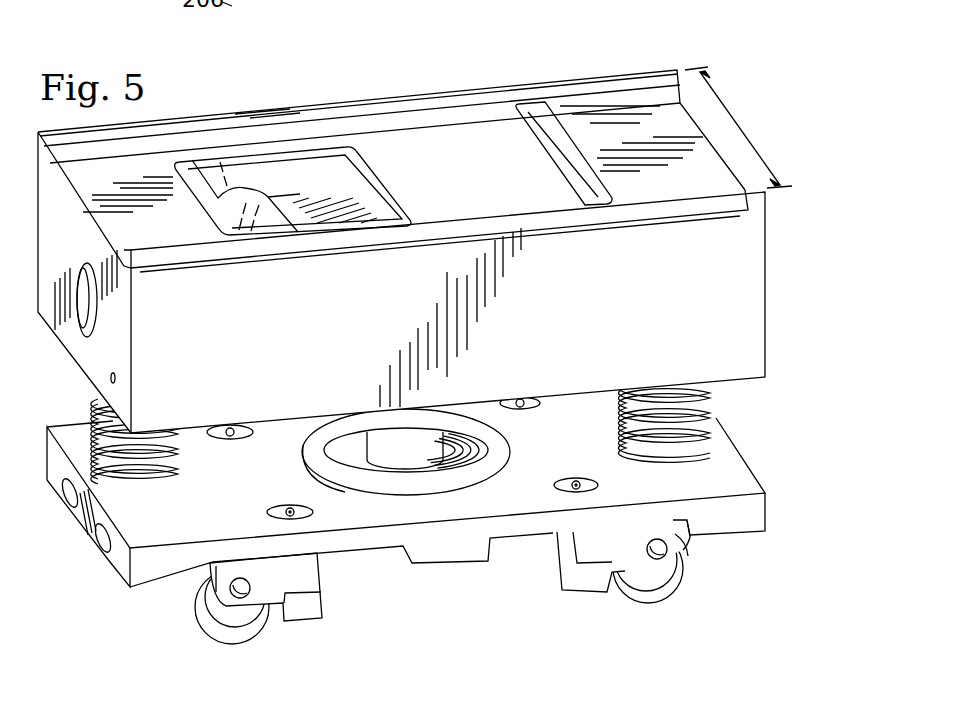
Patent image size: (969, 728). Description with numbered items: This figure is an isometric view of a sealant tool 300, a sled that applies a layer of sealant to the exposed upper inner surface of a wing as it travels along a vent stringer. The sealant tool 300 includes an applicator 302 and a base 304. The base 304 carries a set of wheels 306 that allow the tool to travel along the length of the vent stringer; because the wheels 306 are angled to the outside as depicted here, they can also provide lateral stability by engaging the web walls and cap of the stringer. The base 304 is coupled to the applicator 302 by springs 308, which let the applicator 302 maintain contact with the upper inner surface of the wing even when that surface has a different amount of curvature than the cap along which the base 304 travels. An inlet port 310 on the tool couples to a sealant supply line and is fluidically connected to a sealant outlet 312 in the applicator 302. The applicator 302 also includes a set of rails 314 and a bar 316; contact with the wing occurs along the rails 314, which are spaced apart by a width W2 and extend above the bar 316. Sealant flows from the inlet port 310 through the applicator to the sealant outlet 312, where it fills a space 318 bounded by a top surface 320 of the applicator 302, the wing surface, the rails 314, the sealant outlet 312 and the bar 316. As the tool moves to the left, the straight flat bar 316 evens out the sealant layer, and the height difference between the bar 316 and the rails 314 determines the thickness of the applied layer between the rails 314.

The sealant tool 300 is at (724, 34).
The applicator 302 is at (614, 330).
The base 304 is at (750, 517).
The wheels 306 is at (233, 630).
The springs 308 is at (178, 468).
The inlet port 310 is at (86, 317).
The sealant outlet 312 is at (315, 192).
The rails 314 is at (620, 82).
The bar 316 is at (543, 117).
The space 318 is at (424, 119).
The top surface 320 is at (457, 182).
The width W2 is at (740, 128).